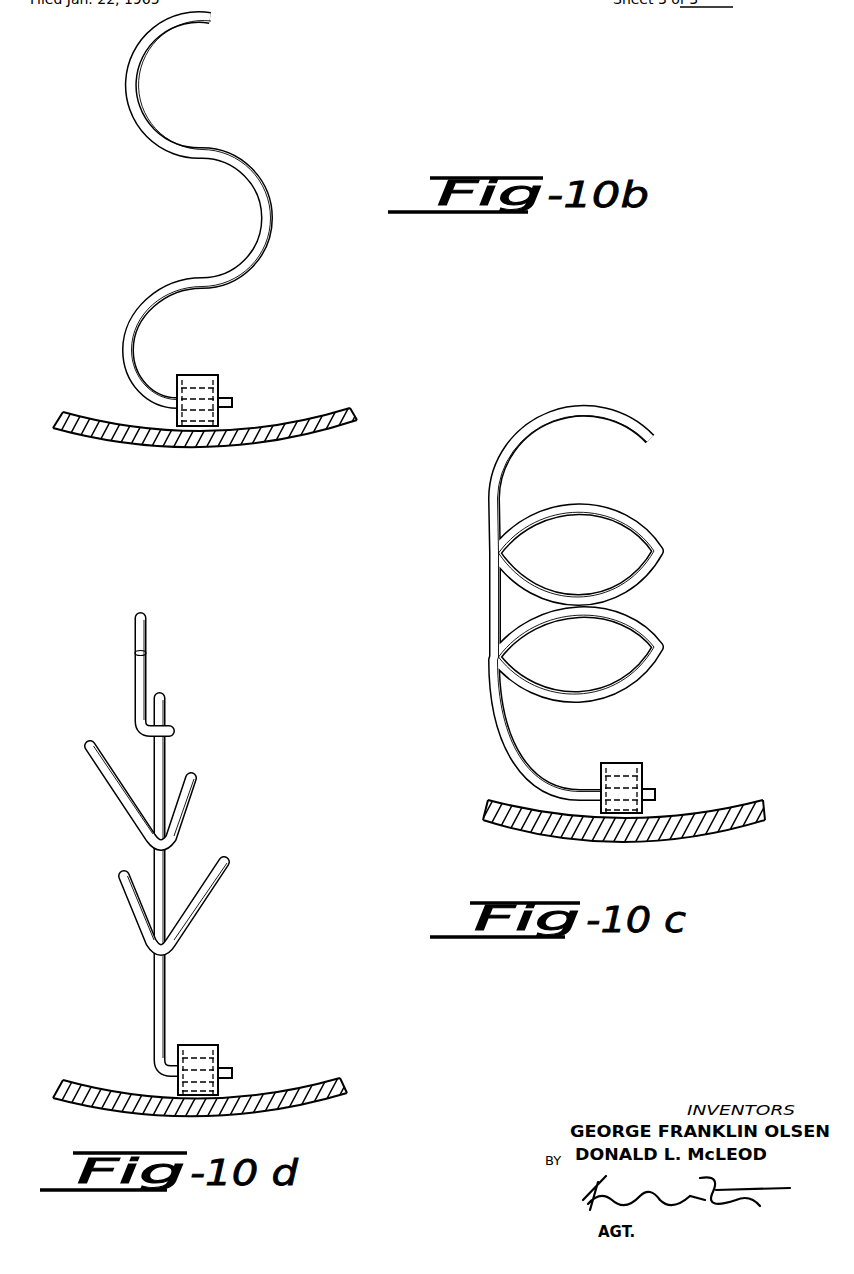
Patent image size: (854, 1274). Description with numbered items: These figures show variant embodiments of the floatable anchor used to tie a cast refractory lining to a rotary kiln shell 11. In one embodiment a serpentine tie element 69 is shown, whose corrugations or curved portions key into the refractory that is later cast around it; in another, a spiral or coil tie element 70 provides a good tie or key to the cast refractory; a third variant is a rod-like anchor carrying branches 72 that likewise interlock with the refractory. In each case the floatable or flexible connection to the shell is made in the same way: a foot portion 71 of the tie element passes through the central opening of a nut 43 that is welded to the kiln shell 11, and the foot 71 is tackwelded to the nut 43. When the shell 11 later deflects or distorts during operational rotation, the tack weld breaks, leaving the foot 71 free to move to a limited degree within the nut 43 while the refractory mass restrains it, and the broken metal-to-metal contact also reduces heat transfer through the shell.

In FIG. 10b, the kiln shell 11 is at (290, 444).
In FIG. 10c, the kiln shell 11 is at (690, 831).
In FIG. 10d, the kiln shell 11 is at (310, 1107).
In FIG. 10b, the nut 43 is at (213, 375).
In FIG. 10c, the nut 43 is at (633, 760).
In FIG. 10d, the nut 43 is at (203, 1045).
In FIG. 10b, the serpentine tie element 69 is at (267, 189).
In FIG. 10c, the spiral or coil tie element 70 is at (661, 553).
In FIG. 10b, the foot portion 71 is at (232, 403).
In FIG. 10c, the foot portion 71 is at (655, 792).
In FIG. 10d, the foot portion 71 is at (232, 1073).
In FIG. 10d, the hook rods / branches 72 is at (148, 652).